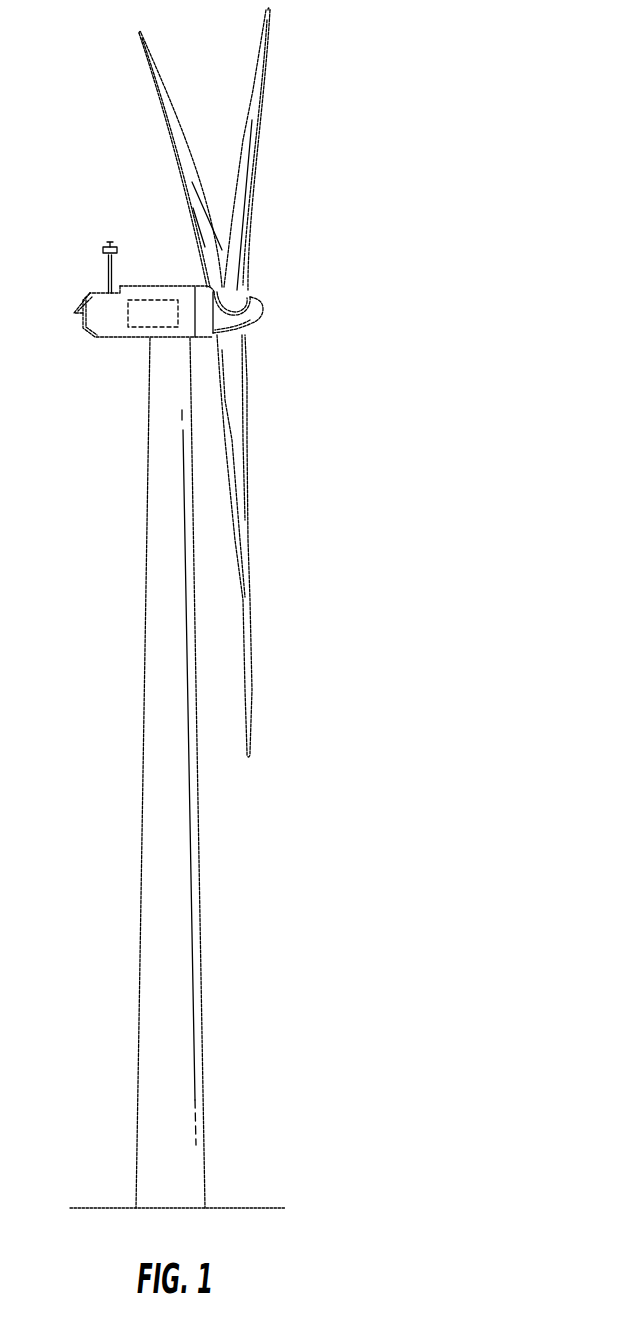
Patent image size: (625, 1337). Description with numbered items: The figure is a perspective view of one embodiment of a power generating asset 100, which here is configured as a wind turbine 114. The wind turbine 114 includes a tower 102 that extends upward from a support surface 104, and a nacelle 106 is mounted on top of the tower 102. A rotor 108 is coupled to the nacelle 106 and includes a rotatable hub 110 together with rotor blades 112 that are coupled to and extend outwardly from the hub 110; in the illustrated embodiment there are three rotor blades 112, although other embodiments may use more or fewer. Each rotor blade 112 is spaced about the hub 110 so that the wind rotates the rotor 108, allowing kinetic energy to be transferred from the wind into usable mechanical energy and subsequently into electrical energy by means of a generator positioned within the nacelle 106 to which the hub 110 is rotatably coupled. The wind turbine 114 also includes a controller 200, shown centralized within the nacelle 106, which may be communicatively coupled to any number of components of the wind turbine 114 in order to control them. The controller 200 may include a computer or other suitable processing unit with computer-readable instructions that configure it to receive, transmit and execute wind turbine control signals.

The power generating asset 100 is at (282, 608).
The wind turbine 114 is at (262, 608).
The tower 102 is at (182, 845).
The support surface 104 is at (248, 1208).
The nacelle 106 is at (122, 339).
The rotor 108 is at (273, 382).
The rotatable hub 110 is at (263, 310).
The rotor blade 112 is at (250, 130).
The controller 200 is at (157, 300).